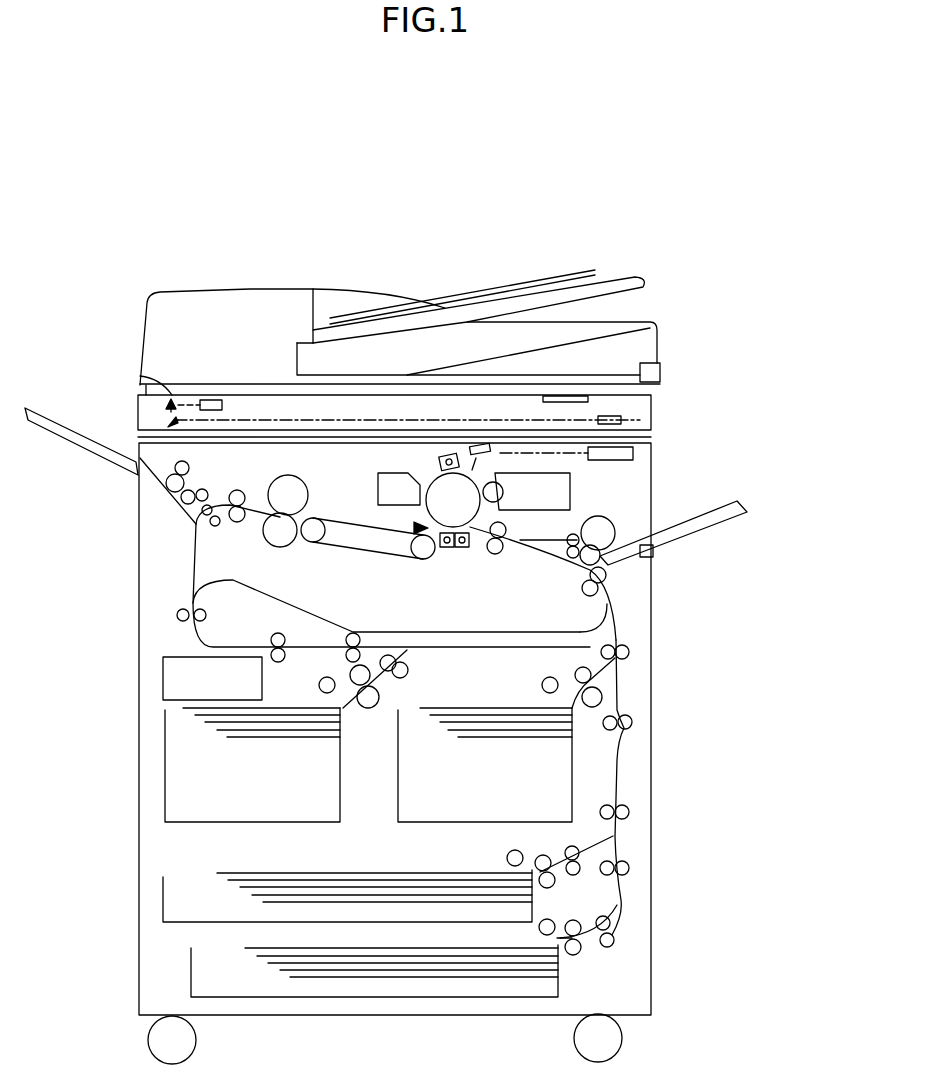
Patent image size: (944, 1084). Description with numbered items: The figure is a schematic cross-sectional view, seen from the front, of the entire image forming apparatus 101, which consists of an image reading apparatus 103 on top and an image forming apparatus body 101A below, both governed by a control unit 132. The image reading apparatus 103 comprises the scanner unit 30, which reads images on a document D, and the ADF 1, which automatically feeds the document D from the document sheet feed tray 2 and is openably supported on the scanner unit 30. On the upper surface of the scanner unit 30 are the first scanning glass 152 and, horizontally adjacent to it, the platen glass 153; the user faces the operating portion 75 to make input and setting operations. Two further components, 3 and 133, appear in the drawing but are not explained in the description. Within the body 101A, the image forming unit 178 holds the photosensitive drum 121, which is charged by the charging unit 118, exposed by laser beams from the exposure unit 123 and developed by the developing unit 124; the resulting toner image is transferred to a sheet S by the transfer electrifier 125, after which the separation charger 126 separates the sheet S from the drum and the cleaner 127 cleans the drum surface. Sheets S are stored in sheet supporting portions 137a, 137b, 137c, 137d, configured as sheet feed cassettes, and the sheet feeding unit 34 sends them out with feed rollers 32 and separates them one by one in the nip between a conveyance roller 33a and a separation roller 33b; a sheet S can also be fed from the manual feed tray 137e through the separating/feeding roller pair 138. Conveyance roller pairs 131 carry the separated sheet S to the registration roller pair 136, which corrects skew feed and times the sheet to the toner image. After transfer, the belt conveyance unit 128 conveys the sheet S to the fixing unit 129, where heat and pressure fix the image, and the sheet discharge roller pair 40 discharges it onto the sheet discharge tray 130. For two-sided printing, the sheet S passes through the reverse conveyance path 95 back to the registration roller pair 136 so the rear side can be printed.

The image forming apparatus 101 is at (357, 200).
The image forming apparatus body 101A is at (672, 462).
The image reading apparatus 103 is at (773, 323).
The ADF 1 is at (455, 304).
The document sheet feed tray 2 is at (633, 272).
The platen cover 3 is at (638, 323).
The document D is at (557, 273).
The platen glass 153 is at (602, 393).
The operating portion 75 is at (566, 395).
The scanner unit 30 is at (424, 388).
The first scanning glass 152 is at (140, 381).
The charging unit 118 is at (449, 454).
The exposure unit 123 is at (633, 450).
The sheet discharge tray 130 is at (42, 432).
The sheet discharge roller pair 40 is at (178, 497).
The fixing unit 129 is at (280, 488).
The cleaner 127 is at (377, 490).
The photosensitive drum 121 is at (427, 485).
The developing unit 124 is at (558, 492).
The image forming unit 178 is at (595, 500).
The separating/feeding roller pair 138 is at (603, 530).
The transfer belt direction 133 is at (412, 527).
The belt conveyance unit 128 is at (372, 525).
The reverse conveyance path 95 is at (308, 645).
The separation charger 126 is at (445, 550).
The transfer electrifier 125 is at (472, 548).
The registration roller pair 136 is at (498, 548).
The manual feed tray 137e is at (722, 527).
The sheet feeding unit 34 is at (630, 622).
The conveyance roller pairs 131 is at (632, 653).
The conveyance roller 33a is at (352, 668).
The separation roller 33b is at (372, 708).
The feed roller 32 is at (320, 682).
The sheet S is at (450, 707).
The control unit 132 is at (163, 684).
The sheet supporting portion 137a is at (191, 975).
The sheet supporting portion 137b is at (163, 900).
The sheet supporting portion 137c is at (165, 775).
The sheet supporting portion 137d is at (572, 768).